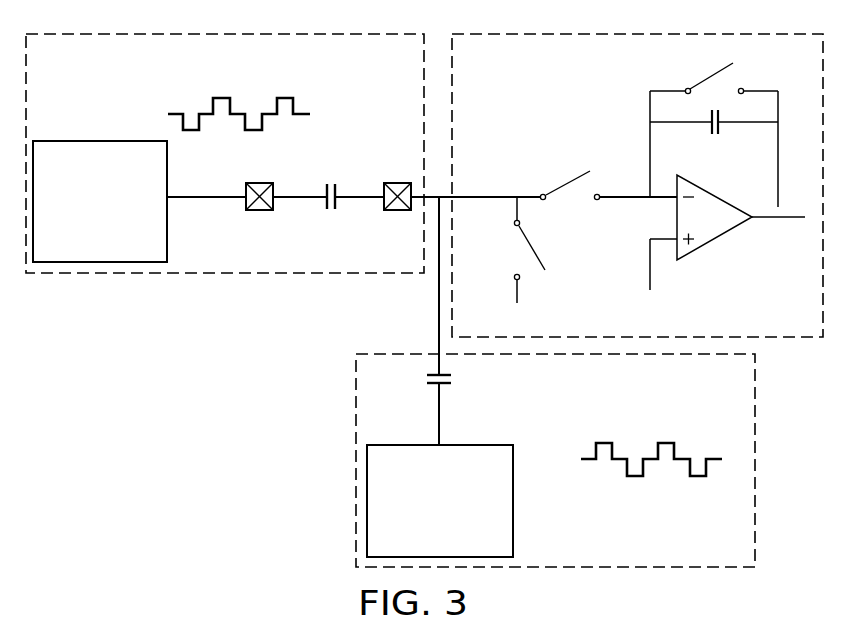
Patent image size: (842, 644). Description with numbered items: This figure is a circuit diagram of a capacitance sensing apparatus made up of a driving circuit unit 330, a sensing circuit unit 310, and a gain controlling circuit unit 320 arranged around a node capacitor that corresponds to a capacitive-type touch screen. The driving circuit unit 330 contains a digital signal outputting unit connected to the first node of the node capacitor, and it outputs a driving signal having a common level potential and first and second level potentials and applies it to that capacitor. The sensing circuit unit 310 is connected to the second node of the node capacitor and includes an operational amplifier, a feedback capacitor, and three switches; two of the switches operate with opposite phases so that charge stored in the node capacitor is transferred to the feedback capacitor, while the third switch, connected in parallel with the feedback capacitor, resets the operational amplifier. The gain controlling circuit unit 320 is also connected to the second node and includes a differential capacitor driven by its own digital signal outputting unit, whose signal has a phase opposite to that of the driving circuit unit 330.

The sensing circuit unit 310 is at (790, 338).
The gain controlling circuit unit 320 is at (356, 458).
The driving circuit unit 330 is at (138, 274).